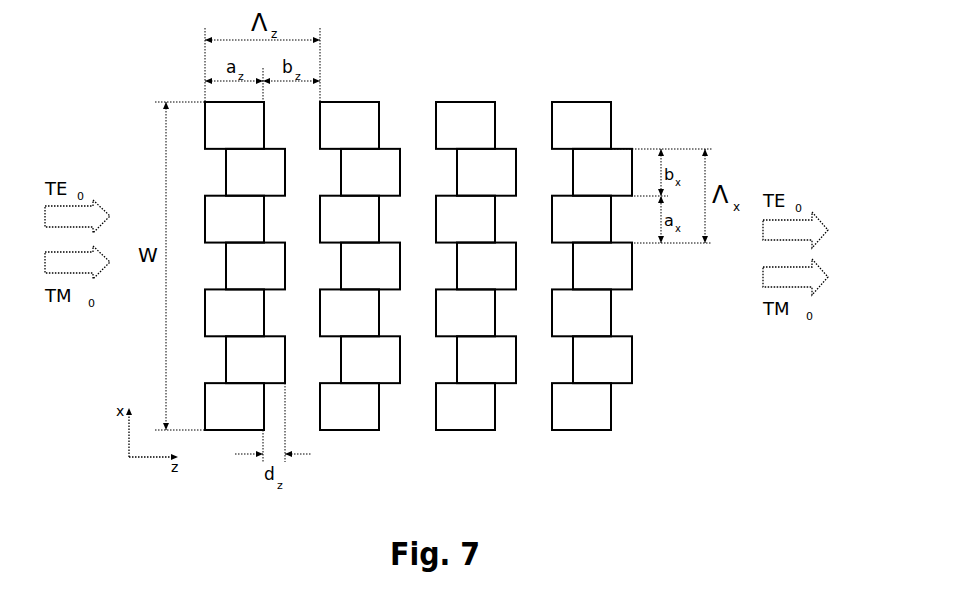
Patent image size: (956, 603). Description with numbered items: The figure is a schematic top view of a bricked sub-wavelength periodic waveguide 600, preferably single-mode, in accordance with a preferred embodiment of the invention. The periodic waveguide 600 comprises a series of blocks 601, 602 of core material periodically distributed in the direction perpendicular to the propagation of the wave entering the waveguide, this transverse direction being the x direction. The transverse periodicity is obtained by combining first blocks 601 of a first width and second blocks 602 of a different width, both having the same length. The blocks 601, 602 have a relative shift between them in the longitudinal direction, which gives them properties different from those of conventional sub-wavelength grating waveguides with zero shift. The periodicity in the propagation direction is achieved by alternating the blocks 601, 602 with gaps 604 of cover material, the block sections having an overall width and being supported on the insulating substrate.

The bricked sub-wavelength periodic waveguide 600 is at (286, 246).
The first blocks 601 is at (361, 118).
The second blocks 602 is at (390, 165).
The gaps 604 is at (520, 120).